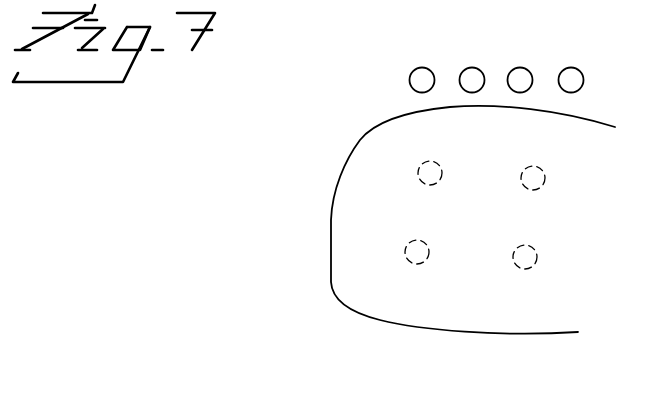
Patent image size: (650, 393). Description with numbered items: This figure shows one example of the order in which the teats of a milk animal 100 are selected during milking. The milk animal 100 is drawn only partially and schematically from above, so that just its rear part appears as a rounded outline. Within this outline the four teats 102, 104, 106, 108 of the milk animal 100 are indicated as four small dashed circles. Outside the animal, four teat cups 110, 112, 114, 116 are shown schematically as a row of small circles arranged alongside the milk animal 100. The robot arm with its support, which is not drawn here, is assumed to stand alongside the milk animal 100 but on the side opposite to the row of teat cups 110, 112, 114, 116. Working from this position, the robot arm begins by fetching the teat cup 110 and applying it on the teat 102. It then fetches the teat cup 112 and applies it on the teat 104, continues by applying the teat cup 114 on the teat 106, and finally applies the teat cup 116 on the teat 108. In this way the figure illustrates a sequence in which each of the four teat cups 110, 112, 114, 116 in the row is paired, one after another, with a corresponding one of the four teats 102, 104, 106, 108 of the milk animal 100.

The milk animal 100 is at (368, 132).
The teat 102 is at (417, 176).
The teat 104 is at (404, 248).
The teat 106 is at (546, 175).
The teat 108 is at (537, 252).
The teat cup 110 is at (420, 67).
The teat cup 112 is at (470, 67).
The teat cup 114 is at (520, 67).
The teat cup 116 is at (572, 67).